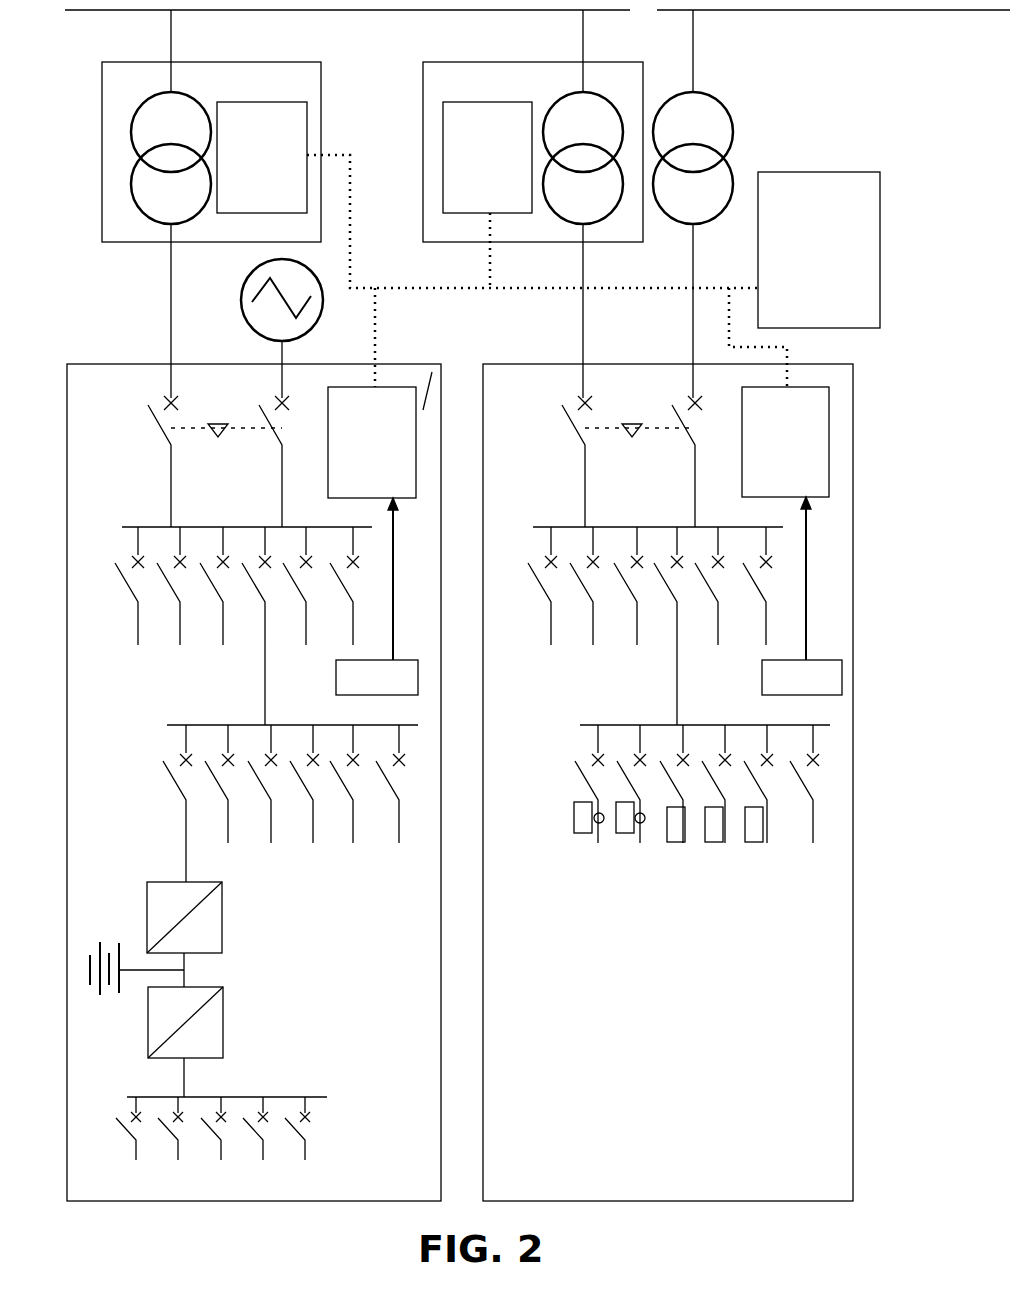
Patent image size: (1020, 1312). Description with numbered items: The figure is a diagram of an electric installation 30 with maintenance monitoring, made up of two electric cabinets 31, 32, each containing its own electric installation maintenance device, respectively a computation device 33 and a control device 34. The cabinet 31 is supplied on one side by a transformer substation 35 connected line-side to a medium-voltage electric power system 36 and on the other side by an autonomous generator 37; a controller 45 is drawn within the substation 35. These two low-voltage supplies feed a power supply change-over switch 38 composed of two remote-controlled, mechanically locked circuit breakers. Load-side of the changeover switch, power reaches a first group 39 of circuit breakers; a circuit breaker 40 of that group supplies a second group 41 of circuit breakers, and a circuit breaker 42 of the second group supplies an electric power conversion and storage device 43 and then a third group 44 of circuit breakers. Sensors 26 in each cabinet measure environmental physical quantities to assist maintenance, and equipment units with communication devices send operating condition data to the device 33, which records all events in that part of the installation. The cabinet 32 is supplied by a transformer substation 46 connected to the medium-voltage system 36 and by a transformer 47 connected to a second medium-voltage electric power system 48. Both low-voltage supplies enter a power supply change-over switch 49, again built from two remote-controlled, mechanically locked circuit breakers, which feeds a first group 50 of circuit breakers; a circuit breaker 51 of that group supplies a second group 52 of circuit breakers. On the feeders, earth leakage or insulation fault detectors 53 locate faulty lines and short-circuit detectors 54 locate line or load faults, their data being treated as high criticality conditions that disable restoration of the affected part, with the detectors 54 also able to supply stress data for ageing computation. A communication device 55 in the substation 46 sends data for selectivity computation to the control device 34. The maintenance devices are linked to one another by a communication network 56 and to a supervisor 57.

The sensors 26 is at (407, 660).
The electric installation 30 is at (785, 122).
The electric cabinet 31 is at (92, 363).
The electric cabinet 32 is at (507, 363).
The electric installation maintenance device 33 is at (395, 387).
The control device 34 is at (803, 387).
The transformer substation 35 is at (202, 204).
The medium-voltage electric power system 36 is at (397, 18).
The autonomous generator 37 is at (240, 298).
The power supply change-over switch 38 is at (137, 432).
The first group of circuit breakers 39 is at (366, 589).
The circuit breaker 40 is at (259, 624).
The second group of circuit breakers 41 is at (137, 783).
The circuit breaker 42 is at (177, 789).
The electric power conversion and storage device 43 is at (249, 1011).
The third group of circuit breakers 44 is at (336, 1128).
The transformer controller 45 is at (307, 133).
The transformer substation 46 is at (503, 204).
The transformer 47 is at (721, 105).
The second medium-voltage electric power system 48 is at (782, 14).
The power supply change-over switch 49 is at (554, 433).
The first group of circuit breakers 50 is at (781, 591).
The circuit breaker 51 is at (667, 592).
The second group of circuit breakers 52 is at (559, 785).
The earth leakage or insulation fault detectors 53 is at (583, 833).
The short-circuit detectors 54 is at (676, 842).
The communication device 55 is at (443, 187).
The communication network 56 is at (364, 290).
The supervisor 57 is at (813, 172).